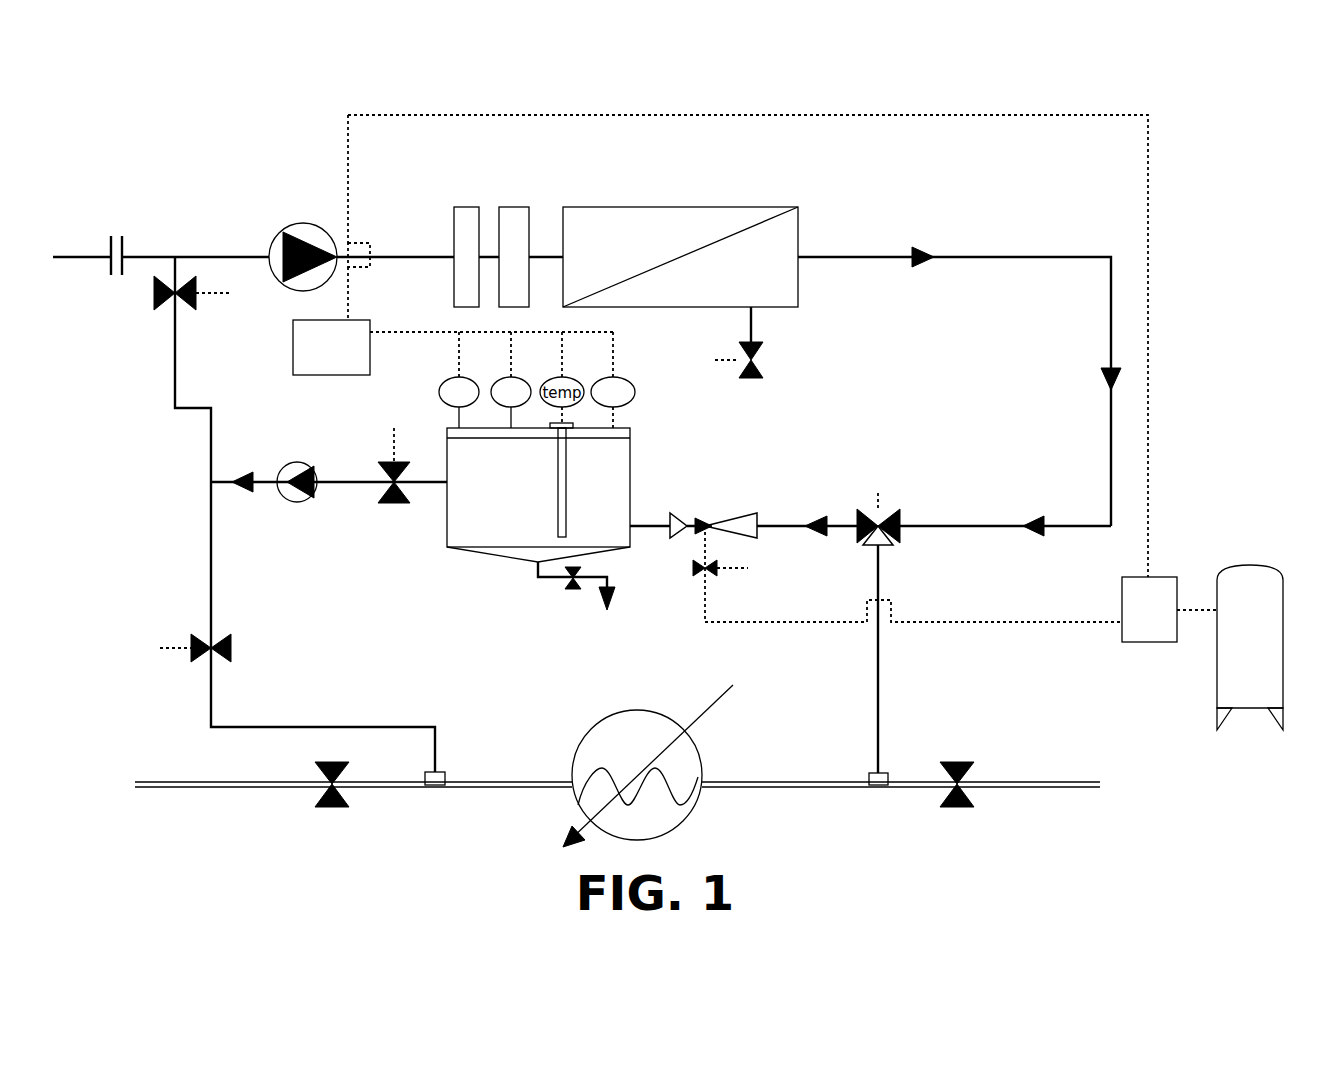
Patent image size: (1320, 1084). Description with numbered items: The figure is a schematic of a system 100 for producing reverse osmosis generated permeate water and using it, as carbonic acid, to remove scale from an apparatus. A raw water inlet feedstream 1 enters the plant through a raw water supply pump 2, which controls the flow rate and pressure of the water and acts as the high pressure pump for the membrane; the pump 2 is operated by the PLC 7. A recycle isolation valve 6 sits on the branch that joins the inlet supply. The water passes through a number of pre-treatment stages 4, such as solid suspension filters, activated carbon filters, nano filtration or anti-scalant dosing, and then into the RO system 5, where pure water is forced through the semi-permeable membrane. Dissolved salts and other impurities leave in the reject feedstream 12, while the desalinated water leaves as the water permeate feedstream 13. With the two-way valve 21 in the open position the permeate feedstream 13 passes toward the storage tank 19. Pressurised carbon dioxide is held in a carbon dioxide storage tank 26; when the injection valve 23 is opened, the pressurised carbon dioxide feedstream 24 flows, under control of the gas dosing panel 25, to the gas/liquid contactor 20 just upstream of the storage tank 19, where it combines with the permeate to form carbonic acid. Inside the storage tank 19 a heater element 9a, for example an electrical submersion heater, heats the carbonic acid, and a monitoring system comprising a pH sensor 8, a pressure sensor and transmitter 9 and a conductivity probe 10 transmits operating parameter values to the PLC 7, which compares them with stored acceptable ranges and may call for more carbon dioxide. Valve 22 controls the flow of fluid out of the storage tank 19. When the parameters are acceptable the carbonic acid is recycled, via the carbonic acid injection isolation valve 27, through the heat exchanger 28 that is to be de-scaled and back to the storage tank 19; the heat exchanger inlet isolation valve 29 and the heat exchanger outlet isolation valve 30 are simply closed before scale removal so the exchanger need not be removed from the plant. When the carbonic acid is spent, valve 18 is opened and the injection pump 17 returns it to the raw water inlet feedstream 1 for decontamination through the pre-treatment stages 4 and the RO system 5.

The system 100 is at (296, 116).
The water inlet feedstream 1 is at (108, 244).
The raw water supply pump 2 is at (300, 224).
The pre-treatment stages 4 is at (515, 207).
The reverse osmosis (RO) system 5 is at (683, 207).
The recycle isolation valve 6 is at (154, 295).
The PLC 7 is at (293, 347).
The pH sensor 8 is at (446, 381).
The pressure sensor and transmitter 9 is at (521, 380).
The heater element 9a is at (630, 494).
The conductivity probe 10 is at (626, 380).
The reject feedstream 12 is at (743, 378).
The water permeate feedstream 13 is at (856, 262).
The injection pump 17 is at (296, 462).
The valve 18 is at (382, 465).
The storage tank 19 is at (447, 530).
The gas/liquid contactor 20 is at (757, 516).
The two-way valve 21 is at (900, 516).
The valve 22 is at (571, 590).
The injection valve 23 is at (693, 568).
The pressurised carbon dioxide feedstream 24 is at (966, 622).
The gas dosing panel 25 is at (1122, 597).
The carbon dioxide storage tank 26 is at (1255, 565).
The carbonic acid injection isolation valve 27 is at (231, 648).
The heat exchanger 28 is at (628, 710).
The heat exchanger inlet isolation valve 29 is at (332, 807).
The heat exchanger outlet isolation valve 30 is at (957, 762).